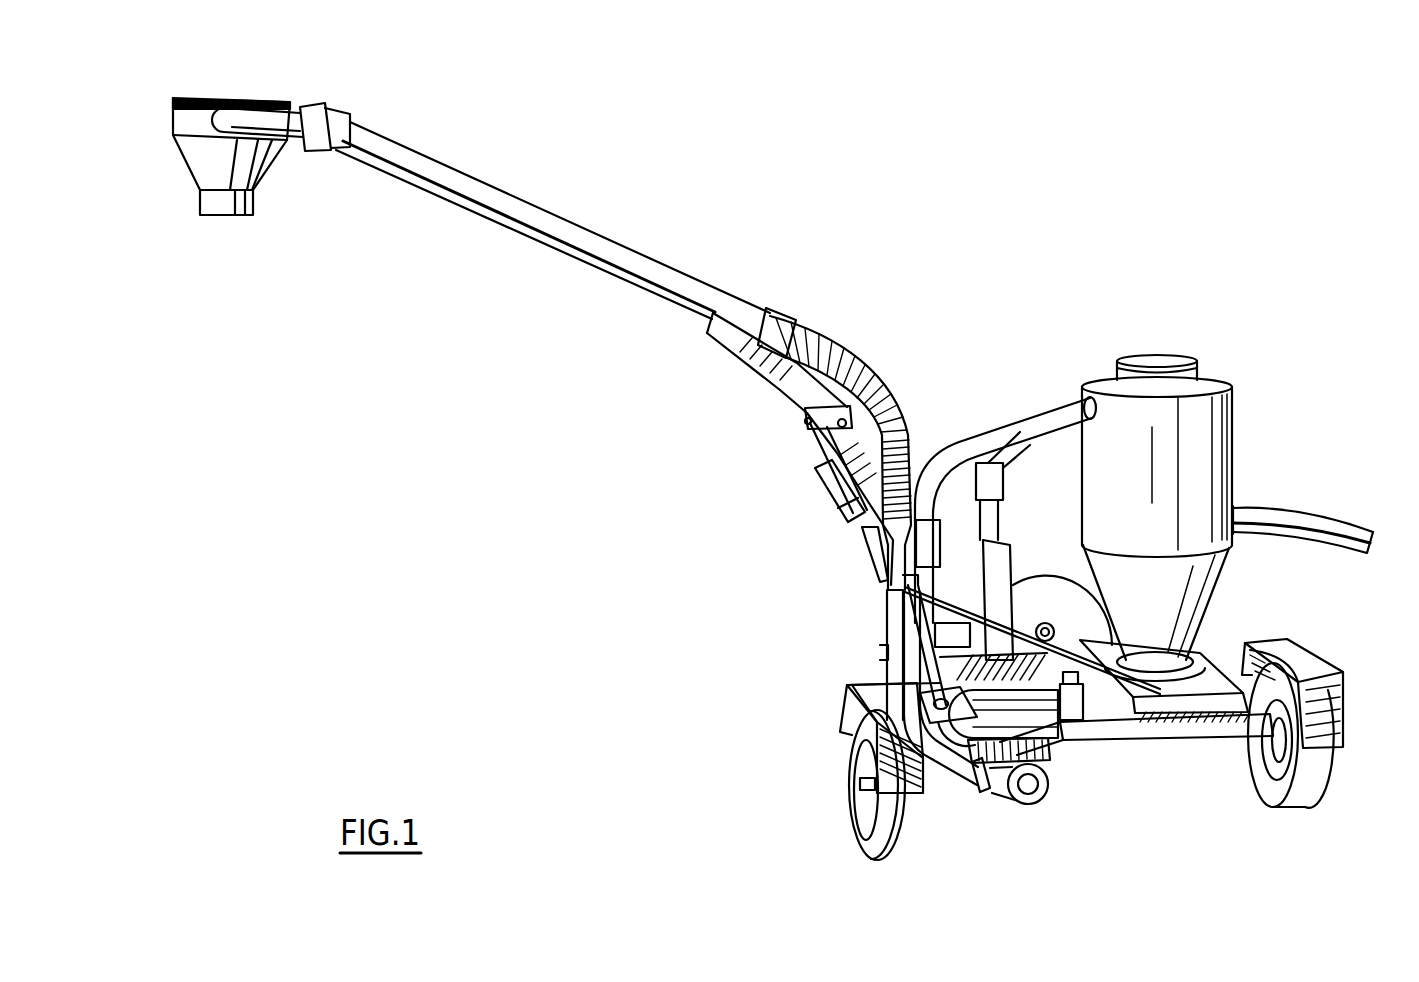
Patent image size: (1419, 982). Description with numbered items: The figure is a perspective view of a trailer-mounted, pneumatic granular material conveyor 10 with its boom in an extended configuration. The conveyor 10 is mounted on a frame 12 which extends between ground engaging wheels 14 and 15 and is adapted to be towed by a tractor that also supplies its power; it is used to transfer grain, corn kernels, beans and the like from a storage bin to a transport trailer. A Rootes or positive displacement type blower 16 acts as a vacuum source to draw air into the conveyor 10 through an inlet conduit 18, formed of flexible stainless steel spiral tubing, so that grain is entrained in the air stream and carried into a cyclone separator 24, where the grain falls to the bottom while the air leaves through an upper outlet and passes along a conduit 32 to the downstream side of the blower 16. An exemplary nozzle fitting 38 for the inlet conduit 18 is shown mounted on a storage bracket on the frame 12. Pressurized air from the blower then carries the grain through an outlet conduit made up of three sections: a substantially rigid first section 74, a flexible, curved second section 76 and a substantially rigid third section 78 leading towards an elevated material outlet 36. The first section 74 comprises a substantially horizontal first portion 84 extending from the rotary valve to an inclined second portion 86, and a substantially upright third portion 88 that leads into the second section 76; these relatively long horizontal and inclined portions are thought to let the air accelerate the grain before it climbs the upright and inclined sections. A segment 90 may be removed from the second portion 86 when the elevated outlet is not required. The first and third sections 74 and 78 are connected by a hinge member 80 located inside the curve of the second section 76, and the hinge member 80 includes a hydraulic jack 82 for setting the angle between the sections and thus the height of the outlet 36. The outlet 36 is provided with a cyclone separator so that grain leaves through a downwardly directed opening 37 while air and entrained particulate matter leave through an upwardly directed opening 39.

The granular material conveyor 10 is at (1194, 493).
The frame 12 is at (1168, 752).
The ground engaging wheel 14 is at (1323, 784).
The ground engaging wheel 15 is at (848, 838).
The blower 16 is at (927, 697).
The inlet conduit 18 is at (1333, 520).
The cyclone separator 24 is at (1240, 440).
The conduit 32 is at (1030, 415).
The material outlet 36 is at (173, 118).
The downwardly directed opening 37 is at (227, 218).
The nozzle fitting 38 is at (987, 460).
The upwardly directed opening 39 is at (244, 97).
The first section 74 is at (903, 717).
The second section 76 is at (847, 347).
The third section 78 is at (530, 205).
The hinge member 80 is at (771, 434).
The hydraulic jack 82 is at (827, 490).
The first portion 84 is at (1078, 775).
The second portion 86 is at (990, 795).
The third portion 88 is at (887, 617).
The segment 90 is at (1012, 802).